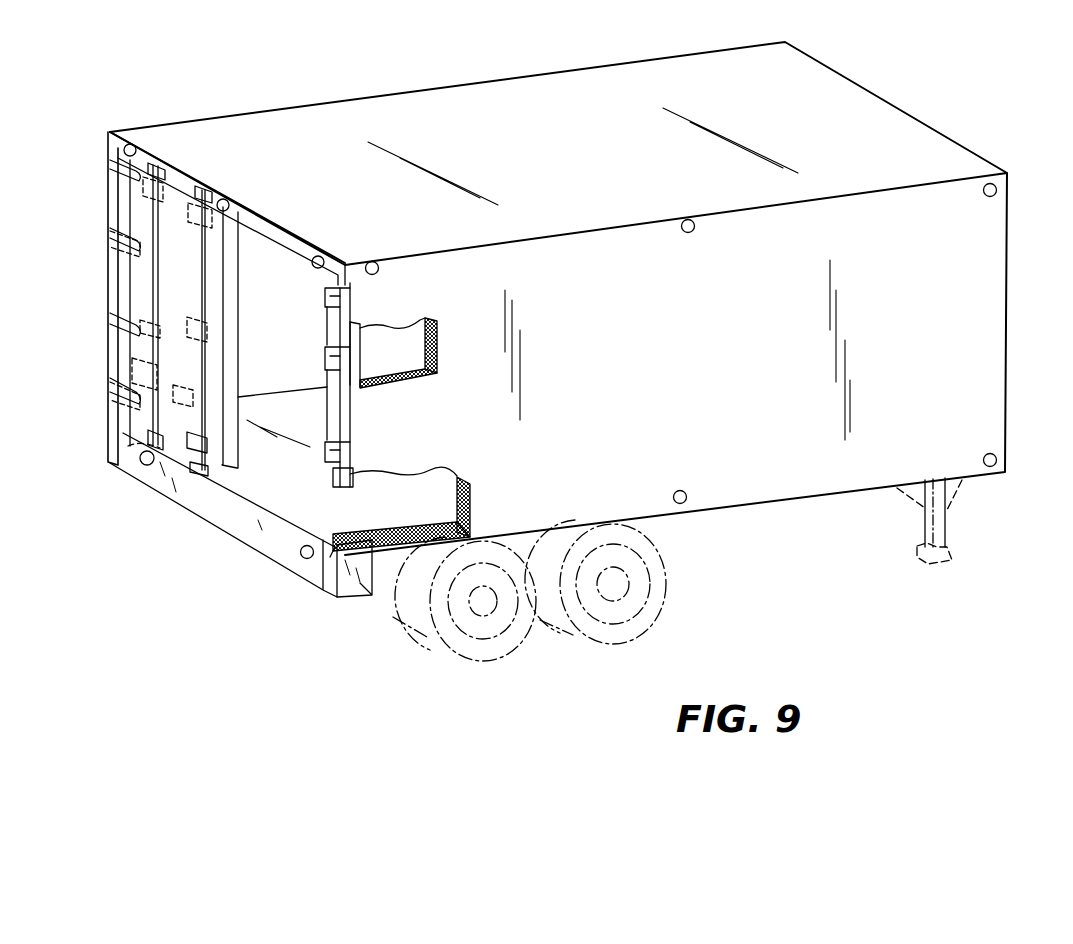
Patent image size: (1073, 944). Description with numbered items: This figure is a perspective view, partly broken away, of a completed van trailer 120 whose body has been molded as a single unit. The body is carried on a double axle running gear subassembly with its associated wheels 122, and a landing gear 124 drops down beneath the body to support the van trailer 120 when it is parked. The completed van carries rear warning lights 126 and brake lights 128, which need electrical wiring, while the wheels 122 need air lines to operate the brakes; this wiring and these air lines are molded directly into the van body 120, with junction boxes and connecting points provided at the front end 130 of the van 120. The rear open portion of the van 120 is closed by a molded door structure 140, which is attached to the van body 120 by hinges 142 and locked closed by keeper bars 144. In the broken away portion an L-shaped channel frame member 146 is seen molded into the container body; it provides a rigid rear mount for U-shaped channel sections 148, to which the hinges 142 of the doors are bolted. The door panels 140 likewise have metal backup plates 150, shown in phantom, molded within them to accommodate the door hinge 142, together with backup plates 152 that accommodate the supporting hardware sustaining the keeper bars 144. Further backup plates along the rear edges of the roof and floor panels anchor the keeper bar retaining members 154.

The van trailer 120 is at (289, 96).
The wheels 122 is at (352, 606).
The landing gear 124 is at (925, 532).
The rear warning lights 126 is at (131, 145).
The brake lights 128 is at (146, 468).
The front end 130 is at (995, 326).
The molded door structure 140 is at (130, 267).
The hinges 142 is at (110, 168).
The keeper bars 144 is at (210, 302).
The L-shaped channel frame member 146 is at (362, 350).
The U-shaped channel sections 148 is at (328, 348).
The metal backup plates 150 is at (118, 215).
The backup plates 152 is at (138, 298).
The keeper bar retaining members 154 is at (130, 368).